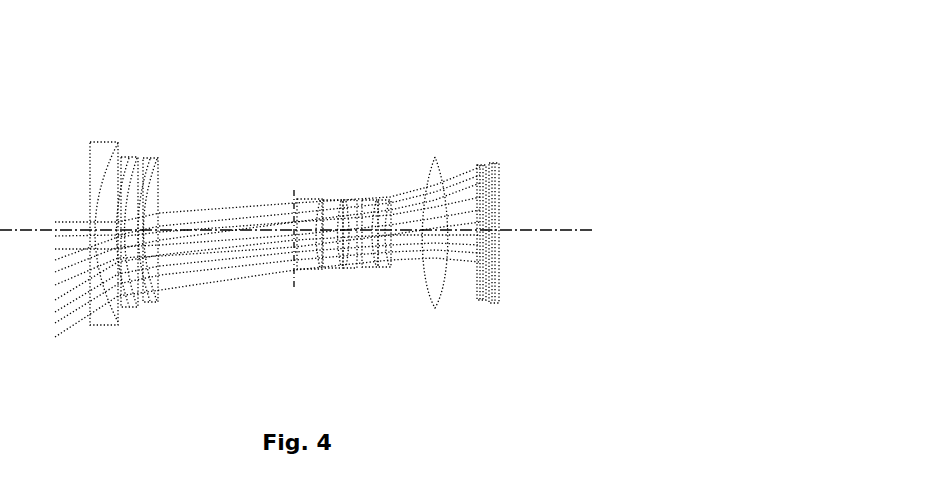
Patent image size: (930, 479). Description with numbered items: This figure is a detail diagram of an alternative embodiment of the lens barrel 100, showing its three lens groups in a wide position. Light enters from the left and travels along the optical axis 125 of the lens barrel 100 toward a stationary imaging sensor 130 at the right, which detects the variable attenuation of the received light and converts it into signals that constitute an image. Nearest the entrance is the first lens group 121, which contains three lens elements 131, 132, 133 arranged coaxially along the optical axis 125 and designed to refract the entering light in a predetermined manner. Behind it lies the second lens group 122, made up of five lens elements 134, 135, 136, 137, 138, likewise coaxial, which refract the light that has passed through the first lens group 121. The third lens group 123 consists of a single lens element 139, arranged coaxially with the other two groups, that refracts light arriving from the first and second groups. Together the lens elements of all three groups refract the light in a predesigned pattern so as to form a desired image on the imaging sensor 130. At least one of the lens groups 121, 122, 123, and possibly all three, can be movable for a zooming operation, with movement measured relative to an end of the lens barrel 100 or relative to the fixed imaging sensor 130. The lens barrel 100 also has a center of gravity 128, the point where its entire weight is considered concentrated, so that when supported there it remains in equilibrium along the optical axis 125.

The lens barrel 100 is at (766, 49).
The first lens group 121 is at (160, 140).
The second lens group 122 is at (388, 180).
The third lens group 123 is at (415, 152).
The optical axis 125 is at (543, 230).
The center of gravity 128 is at (298, 270).
The imaging sensor 130 is at (465, 152).
The lens element 131 is at (103, 326).
The lens element 132 is at (128, 307).
The lens element 133 is at (154, 305).
The lens element 134 is at (308, 271).
The lens element 135 is at (329, 270).
The lens element 136 is at (351, 270).
The lens element 137 is at (370, 269).
The lens element 138 is at (383, 270).
The lens element 139 is at (442, 285).